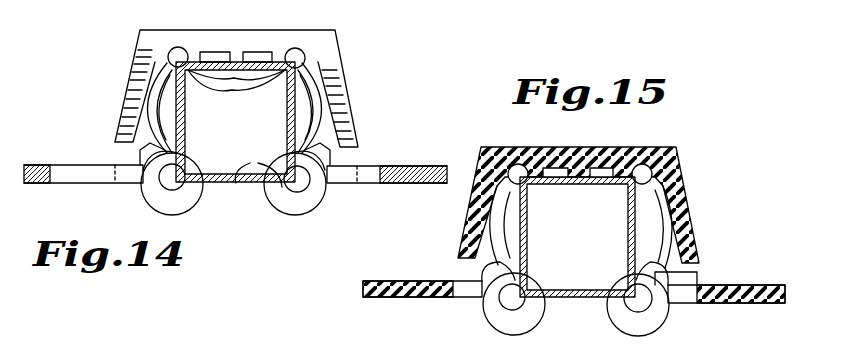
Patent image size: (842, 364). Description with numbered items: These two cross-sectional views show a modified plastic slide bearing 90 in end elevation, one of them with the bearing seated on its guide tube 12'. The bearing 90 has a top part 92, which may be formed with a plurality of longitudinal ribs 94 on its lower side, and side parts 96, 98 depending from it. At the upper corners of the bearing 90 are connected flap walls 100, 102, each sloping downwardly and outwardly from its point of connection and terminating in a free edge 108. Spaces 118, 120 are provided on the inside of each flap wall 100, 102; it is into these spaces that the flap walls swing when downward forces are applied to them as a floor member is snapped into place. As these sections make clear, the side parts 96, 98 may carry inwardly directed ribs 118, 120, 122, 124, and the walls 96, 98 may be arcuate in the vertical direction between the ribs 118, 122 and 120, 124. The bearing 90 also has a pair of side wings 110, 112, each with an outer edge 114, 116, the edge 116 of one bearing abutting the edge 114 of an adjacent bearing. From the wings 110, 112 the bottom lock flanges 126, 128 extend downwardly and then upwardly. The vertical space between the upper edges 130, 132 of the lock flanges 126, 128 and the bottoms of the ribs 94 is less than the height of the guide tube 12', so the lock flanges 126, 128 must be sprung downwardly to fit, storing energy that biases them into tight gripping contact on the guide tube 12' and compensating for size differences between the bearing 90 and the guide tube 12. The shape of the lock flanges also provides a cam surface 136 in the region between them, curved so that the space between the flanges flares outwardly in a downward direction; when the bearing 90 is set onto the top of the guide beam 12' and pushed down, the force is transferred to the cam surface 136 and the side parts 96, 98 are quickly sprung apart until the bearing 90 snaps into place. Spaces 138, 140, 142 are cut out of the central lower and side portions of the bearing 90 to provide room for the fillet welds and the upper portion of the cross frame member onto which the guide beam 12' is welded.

In FIG. 14, the guide tube 12 is at (354, 103).
In FIG. 15, the guide tube 12' is at (627, 209).
In FIG. 14, the plastic slide bearing 90 is at (351, 63).
In FIG. 15, the plastic slide bearing 90 is at (488, 137).
In FIG. 14, the top part 92 is at (266, 32).
In FIG. 15, the top part 92 is at (577, 148).
In FIG. 14, the longitudinal ribs 94 is at (236, 95).
In FIG. 14, the side part 96 is at (150, 95).
In FIG. 14, the side part 98 is at (330, 118).
In FIG. 14, the flap wall 100 is at (130, 70).
In FIG. 15, the flap wall 100 is at (468, 230).
In FIG. 14, the flap wall 102 is at (345, 127).
In FIG. 14, the free edge 108 is at (353, 148).
In FIG. 14, the side wing 110 is at (46, 184).
In FIG. 15, the side wing 110 is at (392, 298).
In FIG. 14, the side wing 112 is at (392, 185).
In FIG. 15, the side wing 112 is at (765, 287).
In FIG. 14, the outer edge 114 is at (26, 172).
In FIG. 14, the outer edge 116 is at (448, 167).
In FIG. 14, the space / inwardly directed rib 118 is at (192, 60).
In FIG. 15, the space / inwardly directed rib 118 is at (480, 262).
In FIG. 14, the space / inwardly directed rib 120 is at (300, 58).
In FIG. 15, the space / inwardly directed rib 120 is at (690, 273).
In FIG. 14, the inwardly directed rib 122 is at (220, 183).
In FIG. 14, the inwardly directed rib 124 is at (272, 186).
In FIG. 14, the bottom lock flange 126 is at (190, 215).
In FIG. 15, the bottom lock flange 126 is at (505, 330).
In FIG. 14, the bottom lock flange 128 is at (303, 216).
In FIG. 15, the bottom lock flange 128 is at (670, 323).
In FIG. 14, the upper edge 130 is at (158, 193).
In FIG. 14, the upper edge 132 is at (263, 196).
In FIG. 14, the cam surface 136 is at (290, 193).
In FIG. 15, the cam surface 136 is at (603, 334).
In FIG. 15, the space 138 is at (577, 306).
In FIG. 15, the space 140 is at (495, 300).
In FIG. 15, the space 142 is at (660, 236).